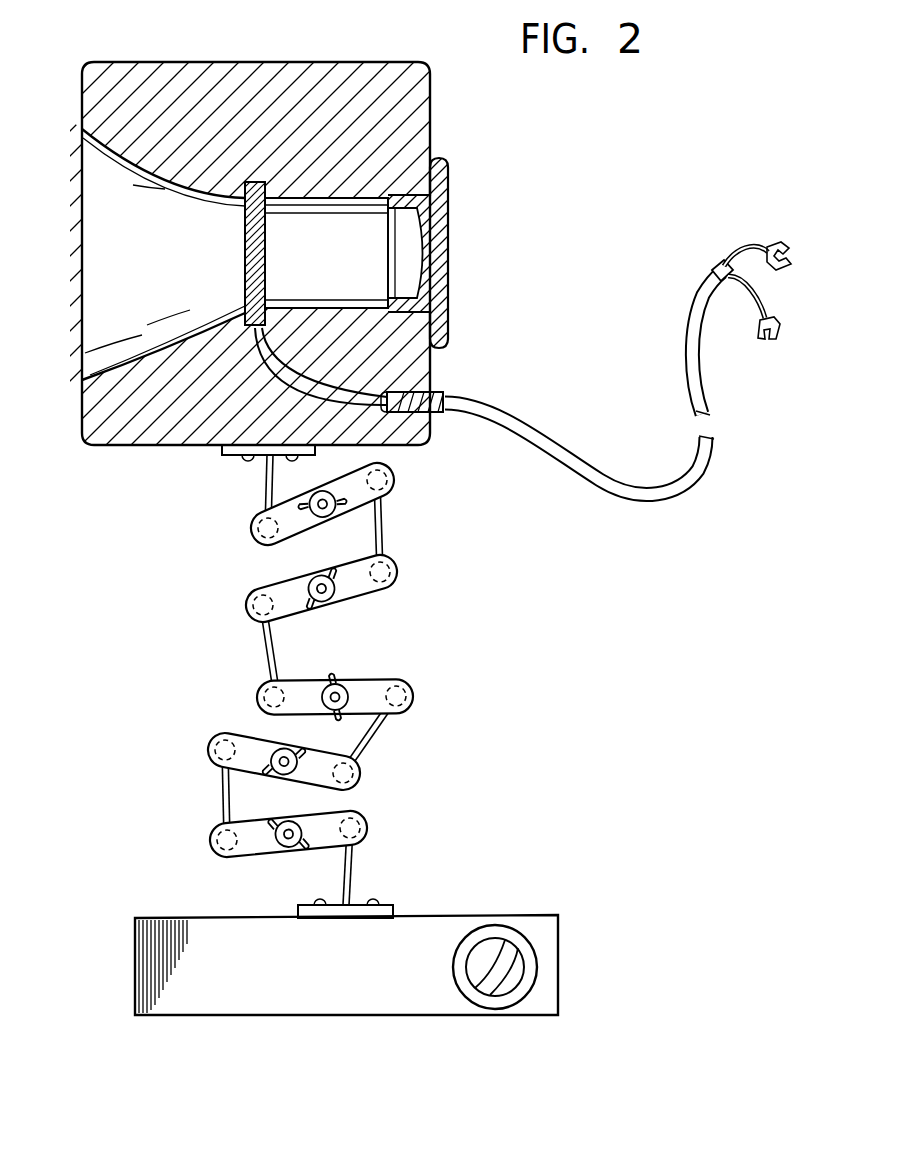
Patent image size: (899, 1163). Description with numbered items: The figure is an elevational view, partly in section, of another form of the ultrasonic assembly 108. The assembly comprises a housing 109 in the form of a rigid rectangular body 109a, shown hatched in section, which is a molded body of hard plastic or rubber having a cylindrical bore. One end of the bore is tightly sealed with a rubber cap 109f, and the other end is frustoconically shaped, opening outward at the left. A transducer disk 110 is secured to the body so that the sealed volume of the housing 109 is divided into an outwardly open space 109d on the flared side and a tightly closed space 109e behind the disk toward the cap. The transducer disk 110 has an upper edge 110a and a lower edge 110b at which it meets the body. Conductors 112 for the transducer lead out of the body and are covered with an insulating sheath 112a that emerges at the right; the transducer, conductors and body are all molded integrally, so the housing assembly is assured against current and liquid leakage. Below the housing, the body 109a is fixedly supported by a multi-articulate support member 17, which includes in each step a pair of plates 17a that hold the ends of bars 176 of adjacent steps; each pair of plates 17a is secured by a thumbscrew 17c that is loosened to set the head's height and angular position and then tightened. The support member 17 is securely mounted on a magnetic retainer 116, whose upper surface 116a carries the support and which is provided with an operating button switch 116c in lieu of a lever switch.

The multi-articulate support member 17 is at (308, 680).
The pair of plates 17a is at (368, 596).
The thumbscrew 17c is at (318, 600).
The connecting rod 176 is at (385, 524).
The ultrasonic assembly 108 is at (618, 368).
The housing 109 is at (452, 213).
The rigid rectangular body 109a is at (358, 84).
The outwardly open space 109d is at (105, 232).
The tightly closed space 109e is at (353, 212).
The rubber cap 109f is at (450, 263).
The transducer disk 110 is at (250, 256).
The plate upper edge 110a is at (245, 210).
The plate lower edge 110b is at (265, 290).
The conductors 112 is at (357, 390).
The insulating sheath 112a is at (597, 460).
The magnetic retainer 116 is at (388, 931).
The base top surface 116a is at (440, 928).
The operating button switch 116c is at (486, 970).